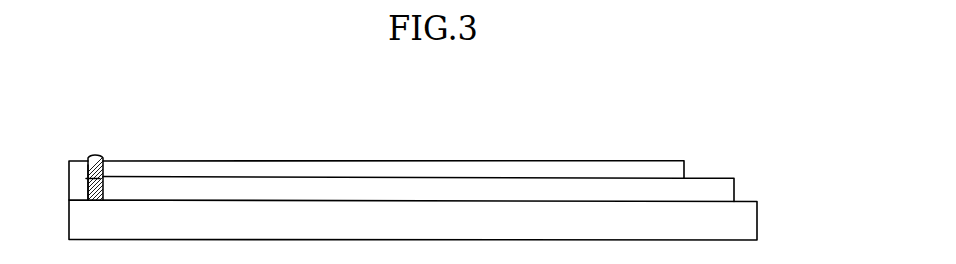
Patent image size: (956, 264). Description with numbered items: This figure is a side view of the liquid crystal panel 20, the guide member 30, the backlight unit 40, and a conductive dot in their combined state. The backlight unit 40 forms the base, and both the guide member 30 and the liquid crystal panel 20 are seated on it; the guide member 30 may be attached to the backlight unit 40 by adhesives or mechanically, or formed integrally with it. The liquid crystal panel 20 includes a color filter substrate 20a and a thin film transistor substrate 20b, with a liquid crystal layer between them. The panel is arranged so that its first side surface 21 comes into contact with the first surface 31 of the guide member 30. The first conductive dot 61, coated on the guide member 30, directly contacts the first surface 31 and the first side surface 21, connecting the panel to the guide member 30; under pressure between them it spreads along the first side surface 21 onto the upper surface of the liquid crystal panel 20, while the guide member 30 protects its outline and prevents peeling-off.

The liquid crystal panel 20 is at (478, 174).
The color filter substrate 20a is at (672, 166).
The thin film transistor substrate 20b is at (730, 191).
The first side surface 21 is at (85, 178).
The guide member 30 is at (78, 185).
The first surface 31 is at (89, 169).
The backlight unit 40 is at (752, 224).
The first conductive dot 61 is at (95, 156).